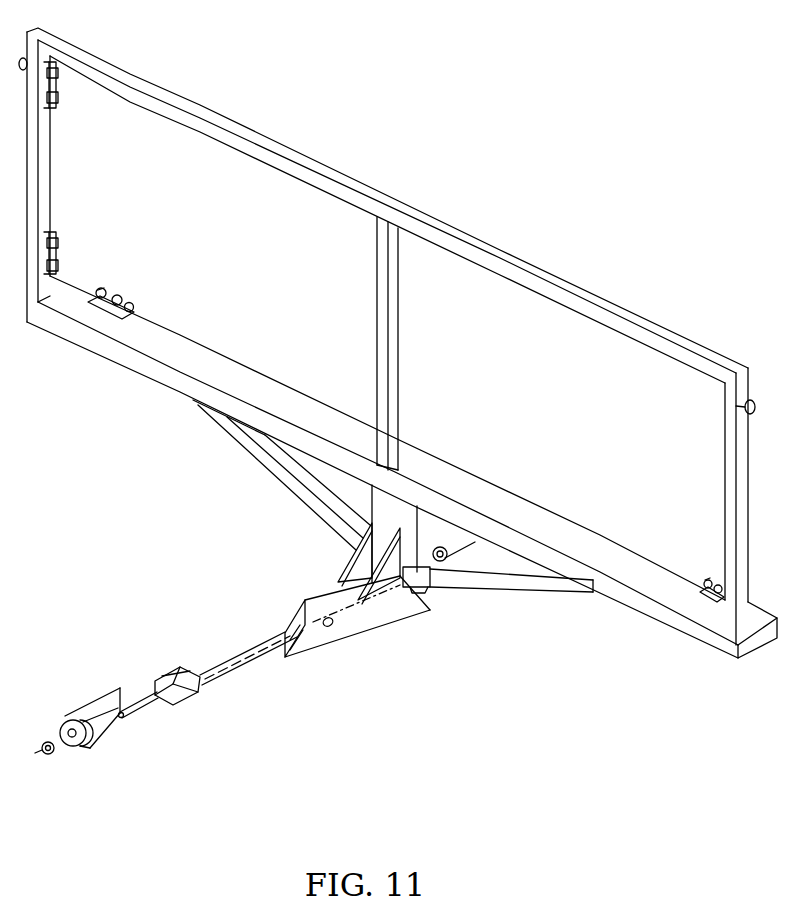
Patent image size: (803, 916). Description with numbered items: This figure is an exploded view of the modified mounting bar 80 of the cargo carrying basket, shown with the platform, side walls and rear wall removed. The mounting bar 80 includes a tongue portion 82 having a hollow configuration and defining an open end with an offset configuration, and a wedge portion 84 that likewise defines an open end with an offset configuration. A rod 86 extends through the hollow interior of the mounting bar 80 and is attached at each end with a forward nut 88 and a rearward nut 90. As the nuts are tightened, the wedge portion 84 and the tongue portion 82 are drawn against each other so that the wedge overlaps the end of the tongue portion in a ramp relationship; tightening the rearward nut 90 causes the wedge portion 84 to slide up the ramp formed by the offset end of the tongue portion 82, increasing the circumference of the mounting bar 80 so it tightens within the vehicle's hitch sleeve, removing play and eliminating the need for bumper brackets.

The mounting bar 80 is at (166, 636).
The tongue portion 82 is at (320, 590).
The wedge portion 84 is at (83, 707).
The rod 86 is at (237, 663).
The forward nut 88 is at (52, 755).
The rearward nut 90 is at (448, 562).